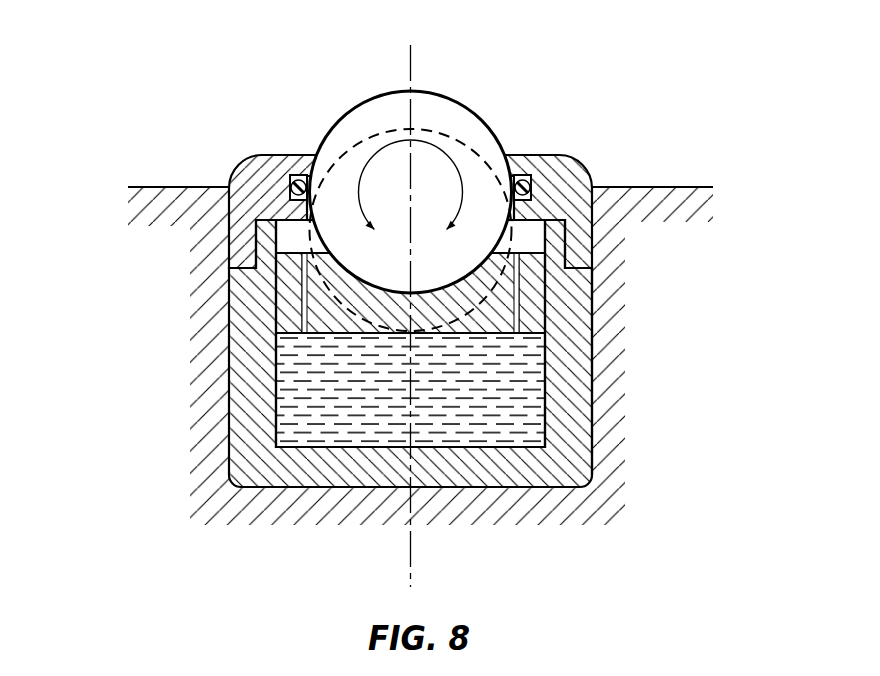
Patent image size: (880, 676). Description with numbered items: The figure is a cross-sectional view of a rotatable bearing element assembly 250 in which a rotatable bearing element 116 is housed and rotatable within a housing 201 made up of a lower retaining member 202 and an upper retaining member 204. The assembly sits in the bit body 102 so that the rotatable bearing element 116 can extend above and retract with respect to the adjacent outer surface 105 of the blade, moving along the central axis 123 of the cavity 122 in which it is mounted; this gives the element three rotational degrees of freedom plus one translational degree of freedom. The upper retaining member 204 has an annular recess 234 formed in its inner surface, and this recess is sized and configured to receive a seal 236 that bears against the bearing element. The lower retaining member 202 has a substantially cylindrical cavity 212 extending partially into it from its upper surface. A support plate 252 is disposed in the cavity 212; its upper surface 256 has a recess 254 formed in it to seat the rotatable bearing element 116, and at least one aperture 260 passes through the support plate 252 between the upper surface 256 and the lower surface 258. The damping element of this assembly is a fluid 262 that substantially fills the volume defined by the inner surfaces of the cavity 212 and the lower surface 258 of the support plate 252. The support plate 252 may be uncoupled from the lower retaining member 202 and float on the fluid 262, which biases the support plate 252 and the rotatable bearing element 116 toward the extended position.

The rotatable bearing element assembly 250 is at (390, 301).
The outer surface of the blade 105 is at (150, 187).
The central axis 123 is at (412, 53).
The rotatable bearing element 116 is at (480, 107).
The annular recess 234 is at (530, 168).
The upper retaining member 204 is at (573, 160).
The seal 236 is at (533, 179).
The housing 201 is at (203, 219).
The cavity 212 is at (286, 236).
The upper surface of the support plate 256 is at (302, 255).
The support plate 252 is at (278, 307).
The lower surface of the support plate 258 is at (330, 335).
The bit body 102 is at (677, 262).
The recess 254 is at (522, 283).
The aperture 260 is at (518, 303).
The cavity 122 is at (588, 356).
The lower retaining member 202 is at (578, 427).
The fluid 262 is at (373, 411).